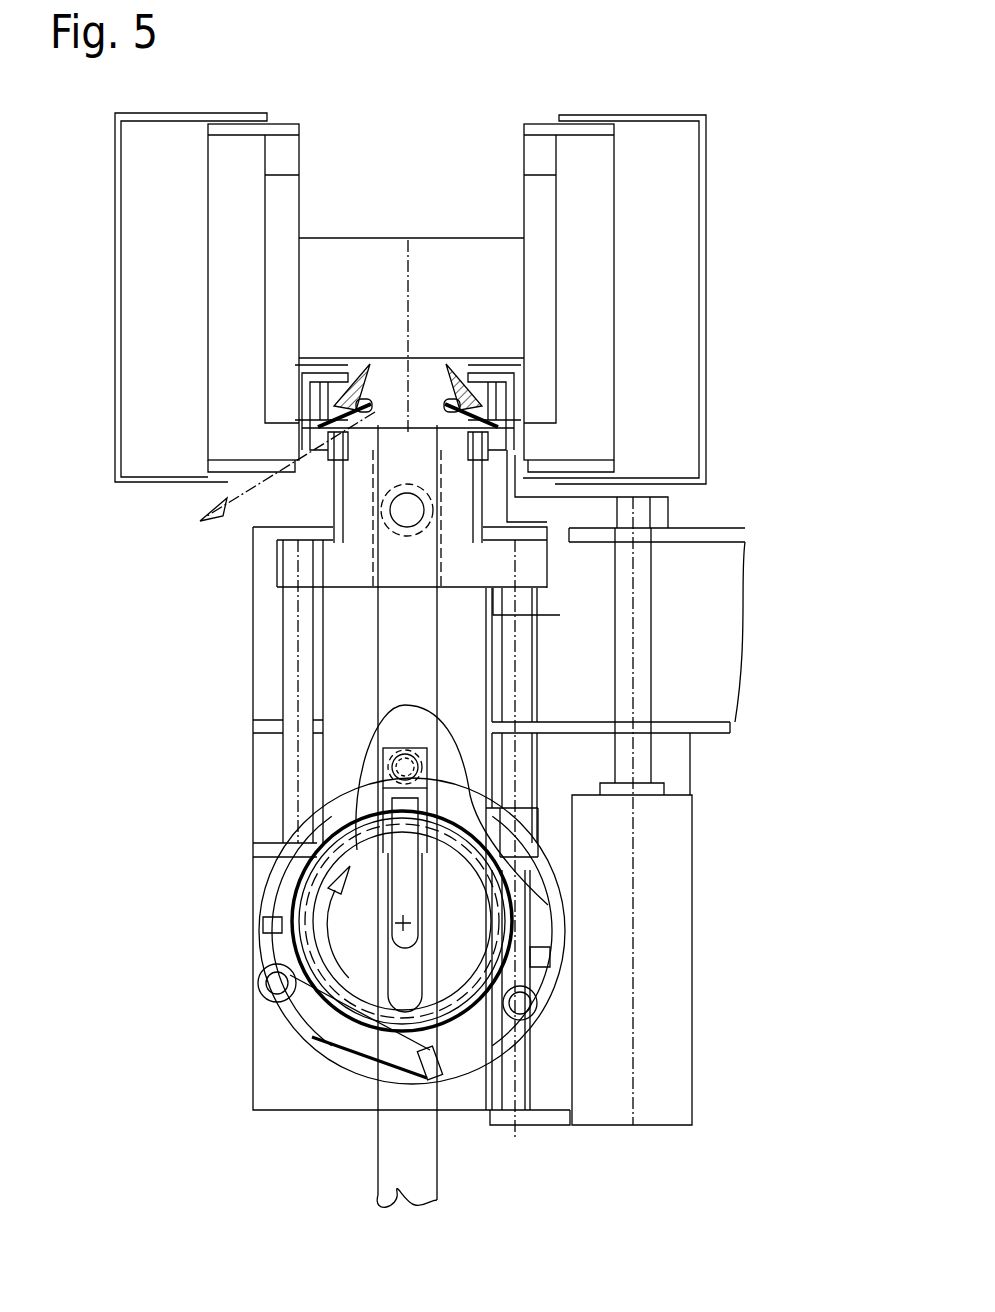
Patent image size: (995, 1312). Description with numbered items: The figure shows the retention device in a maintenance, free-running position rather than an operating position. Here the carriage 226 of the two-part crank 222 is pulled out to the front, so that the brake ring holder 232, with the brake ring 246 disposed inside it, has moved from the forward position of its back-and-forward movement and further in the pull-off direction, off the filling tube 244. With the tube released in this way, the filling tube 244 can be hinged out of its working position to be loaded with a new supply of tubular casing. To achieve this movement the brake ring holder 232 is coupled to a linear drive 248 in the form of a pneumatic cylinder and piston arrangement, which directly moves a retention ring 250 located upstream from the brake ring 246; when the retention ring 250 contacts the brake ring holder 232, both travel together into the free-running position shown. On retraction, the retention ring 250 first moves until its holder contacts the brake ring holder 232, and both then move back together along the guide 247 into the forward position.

The crank 222 is at (565, 1005).
The carriage 226 is at (412, 893).
The brake ring holder 232 is at (463, 366).
The filling tube 244 is at (413, 1158).
The brake ring 246 is at (378, 366).
The guide 247 is at (293, 663).
The linear drive 248 is at (667, 833).
The retention ring 250 is at (500, 441).